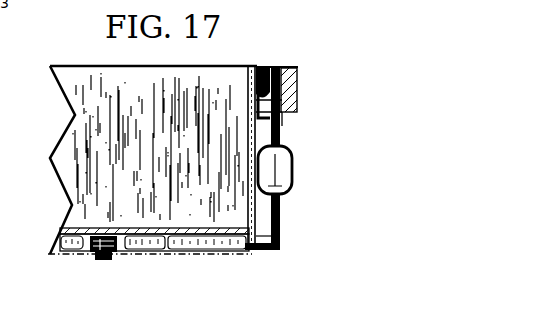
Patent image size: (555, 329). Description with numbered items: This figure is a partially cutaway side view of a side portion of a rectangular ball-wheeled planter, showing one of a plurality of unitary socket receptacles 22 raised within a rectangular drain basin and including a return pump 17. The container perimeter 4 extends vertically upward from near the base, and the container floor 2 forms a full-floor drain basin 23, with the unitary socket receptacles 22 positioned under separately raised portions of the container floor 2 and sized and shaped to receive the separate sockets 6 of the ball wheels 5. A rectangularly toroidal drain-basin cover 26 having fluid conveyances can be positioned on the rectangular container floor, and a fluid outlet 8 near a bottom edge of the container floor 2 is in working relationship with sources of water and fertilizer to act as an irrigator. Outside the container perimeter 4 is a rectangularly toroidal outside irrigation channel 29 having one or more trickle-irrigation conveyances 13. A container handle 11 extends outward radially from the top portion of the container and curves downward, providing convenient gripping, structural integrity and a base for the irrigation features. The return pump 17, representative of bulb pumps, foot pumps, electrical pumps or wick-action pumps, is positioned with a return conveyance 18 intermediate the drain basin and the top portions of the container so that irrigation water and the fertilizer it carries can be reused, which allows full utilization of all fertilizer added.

The container floor 2 is at (168, 228).
The container perimeter 4 is at (284, 124).
The ball wheels 5 is at (103, 257).
The sockets 6 is at (53, 250).
The fluid outlet 8 is at (252, 255).
The container handle 11 is at (298, 106).
The trickle-irrigation conveyances 13 is at (227, 96).
The return pump 17 is at (292, 171).
The return conveyance 18 is at (266, 74).
The unitary socket receptacles 22 is at (64, 227).
The full-floor drain basin 23 is at (256, 247).
The rectangularly toroidal drain-basin cover 26 is at (128, 221).
The rectangularly toroidal outside irrigation channel 29 is at (298, 72).